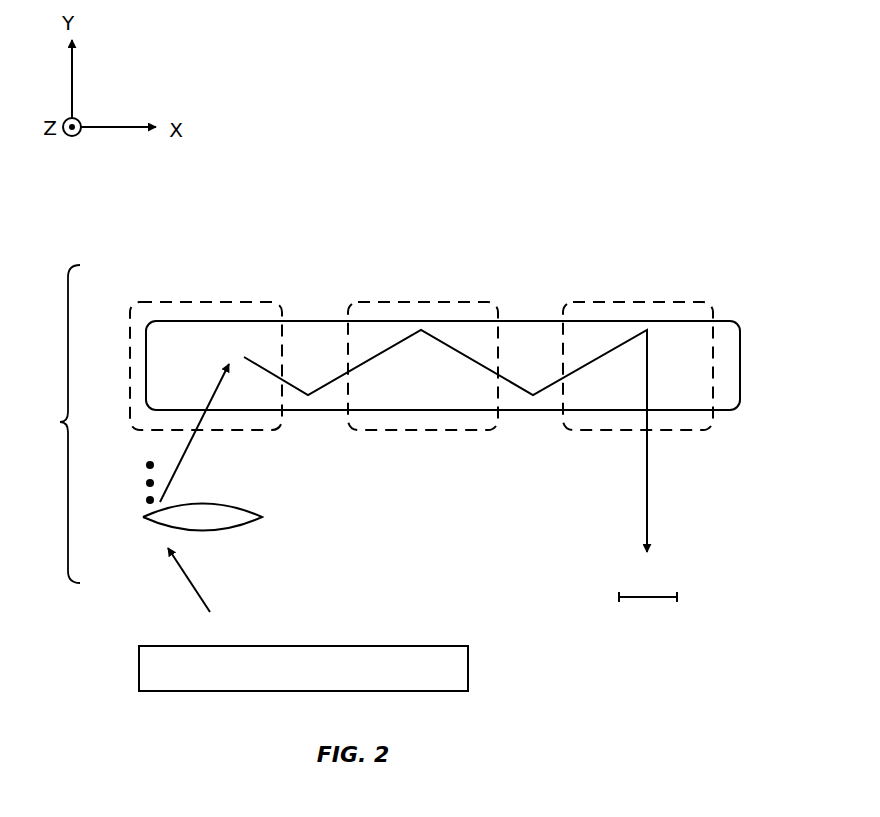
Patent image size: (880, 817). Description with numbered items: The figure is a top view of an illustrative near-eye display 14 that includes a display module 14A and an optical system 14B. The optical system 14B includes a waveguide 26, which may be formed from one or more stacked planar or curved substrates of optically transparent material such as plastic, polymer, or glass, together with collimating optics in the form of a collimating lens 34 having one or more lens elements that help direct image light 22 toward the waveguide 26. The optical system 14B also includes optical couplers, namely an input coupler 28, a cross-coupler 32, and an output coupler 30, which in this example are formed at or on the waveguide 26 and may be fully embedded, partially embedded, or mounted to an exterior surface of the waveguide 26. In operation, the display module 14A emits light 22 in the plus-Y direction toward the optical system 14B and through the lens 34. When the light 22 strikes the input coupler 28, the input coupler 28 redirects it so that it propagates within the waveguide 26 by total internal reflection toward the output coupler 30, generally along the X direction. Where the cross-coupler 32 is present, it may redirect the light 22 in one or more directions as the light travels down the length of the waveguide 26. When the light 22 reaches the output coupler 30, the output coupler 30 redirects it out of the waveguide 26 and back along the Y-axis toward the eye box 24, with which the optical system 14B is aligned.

The display 14 is at (555, 180).
The display module 14A is at (468, 657).
The optical system 14B is at (46, 424).
The image light 22 is at (182, 460).
The eye box 24 is at (652, 603).
The waveguide 26 is at (740, 352).
The input coupler 28 is at (200, 301).
The output coupler 30 is at (632, 302).
The cross-coupler 32 is at (420, 302).
The collimating lens 34 is at (274, 514).